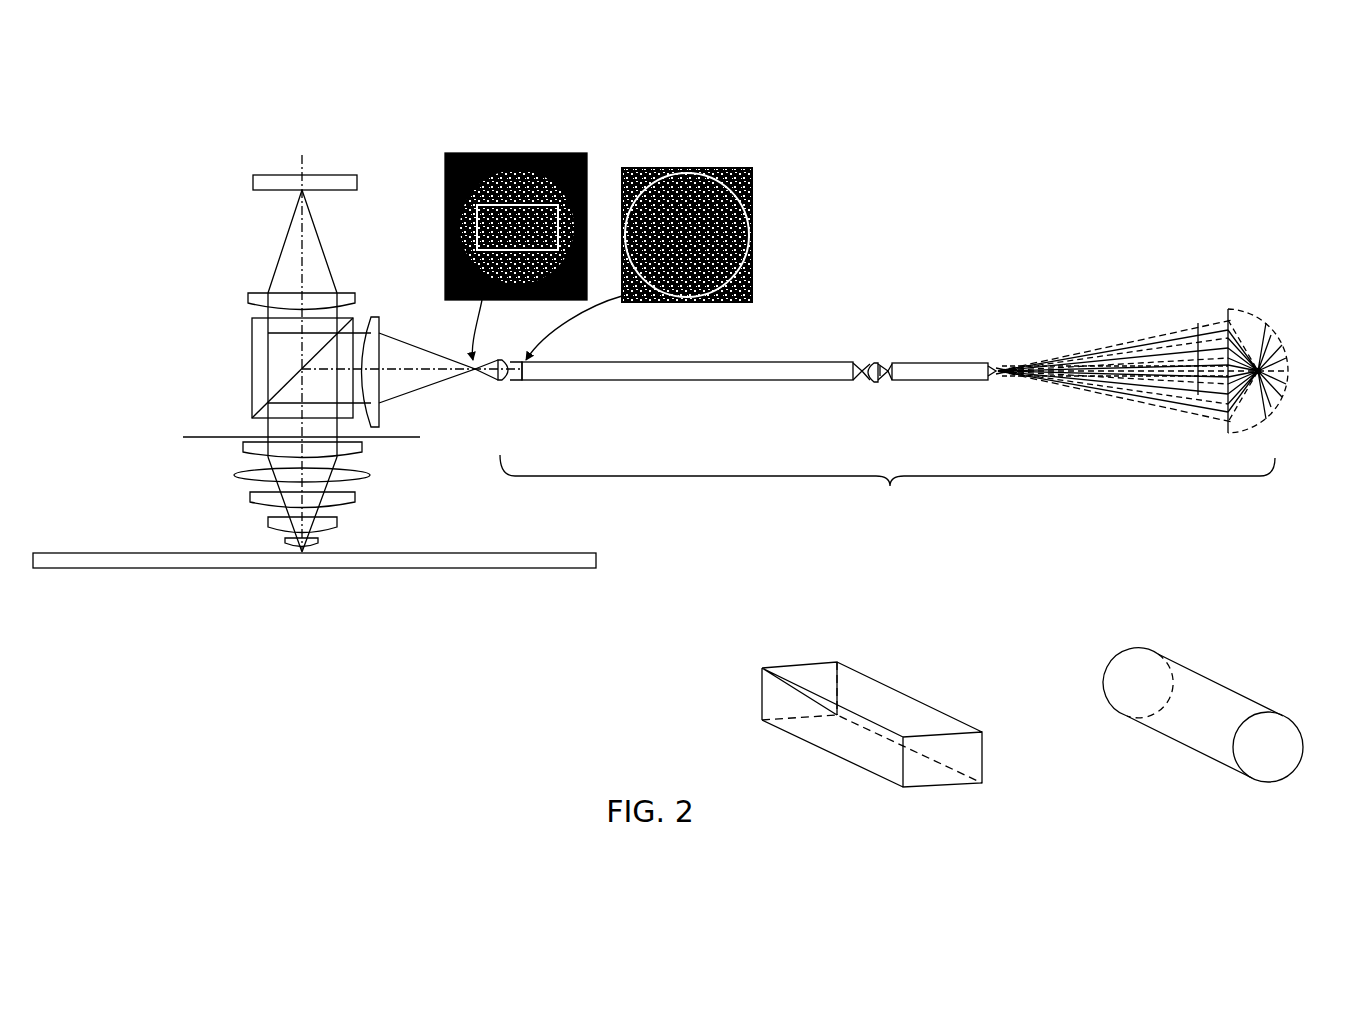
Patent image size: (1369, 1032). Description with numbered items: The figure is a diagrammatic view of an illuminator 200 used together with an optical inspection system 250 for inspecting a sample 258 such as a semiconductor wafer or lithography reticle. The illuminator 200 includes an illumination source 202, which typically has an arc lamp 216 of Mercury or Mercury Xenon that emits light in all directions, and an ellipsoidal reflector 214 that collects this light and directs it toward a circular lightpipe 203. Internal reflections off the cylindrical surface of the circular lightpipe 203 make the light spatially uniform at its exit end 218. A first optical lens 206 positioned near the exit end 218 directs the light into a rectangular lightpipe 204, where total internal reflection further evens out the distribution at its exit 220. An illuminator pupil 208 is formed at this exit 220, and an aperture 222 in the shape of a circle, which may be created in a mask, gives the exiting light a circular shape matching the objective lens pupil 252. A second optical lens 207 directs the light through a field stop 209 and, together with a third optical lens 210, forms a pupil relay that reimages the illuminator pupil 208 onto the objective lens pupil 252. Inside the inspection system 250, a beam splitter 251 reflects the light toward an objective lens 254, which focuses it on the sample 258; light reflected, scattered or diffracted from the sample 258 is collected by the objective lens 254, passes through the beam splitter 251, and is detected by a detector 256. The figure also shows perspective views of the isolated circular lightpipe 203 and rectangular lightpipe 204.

The illuminator 200 is at (887, 491).
The illumination source 202 is at (1260, 314).
The circular lightpipe 203 is at (937, 362).
The rectangular lightpipe 204 is at (680, 362).
The first optical lens 206 is at (872, 362).
The second optical lens 207 is at (503, 382).
The illuminator pupil 208 is at (678, 251).
The field stop 209 is at (580, 152).
The third optical lens 210 is at (376, 318).
The ellipsoidal reflector 214 is at (1262, 342).
The arc lamp 216 is at (1250, 412).
The exit end 218 is at (886, 360).
The exit end 220 is at (519, 384).
The aperture 222 is at (742, 186).
The optical inspection system 250 is at (176, 190).
The beam splitter 251 is at (252, 347).
The objective lens pupil 252 is at (242, 433).
The objective lens 254 is at (232, 442).
The detector 256 is at (350, 173).
The sample 258 is at (596, 559).